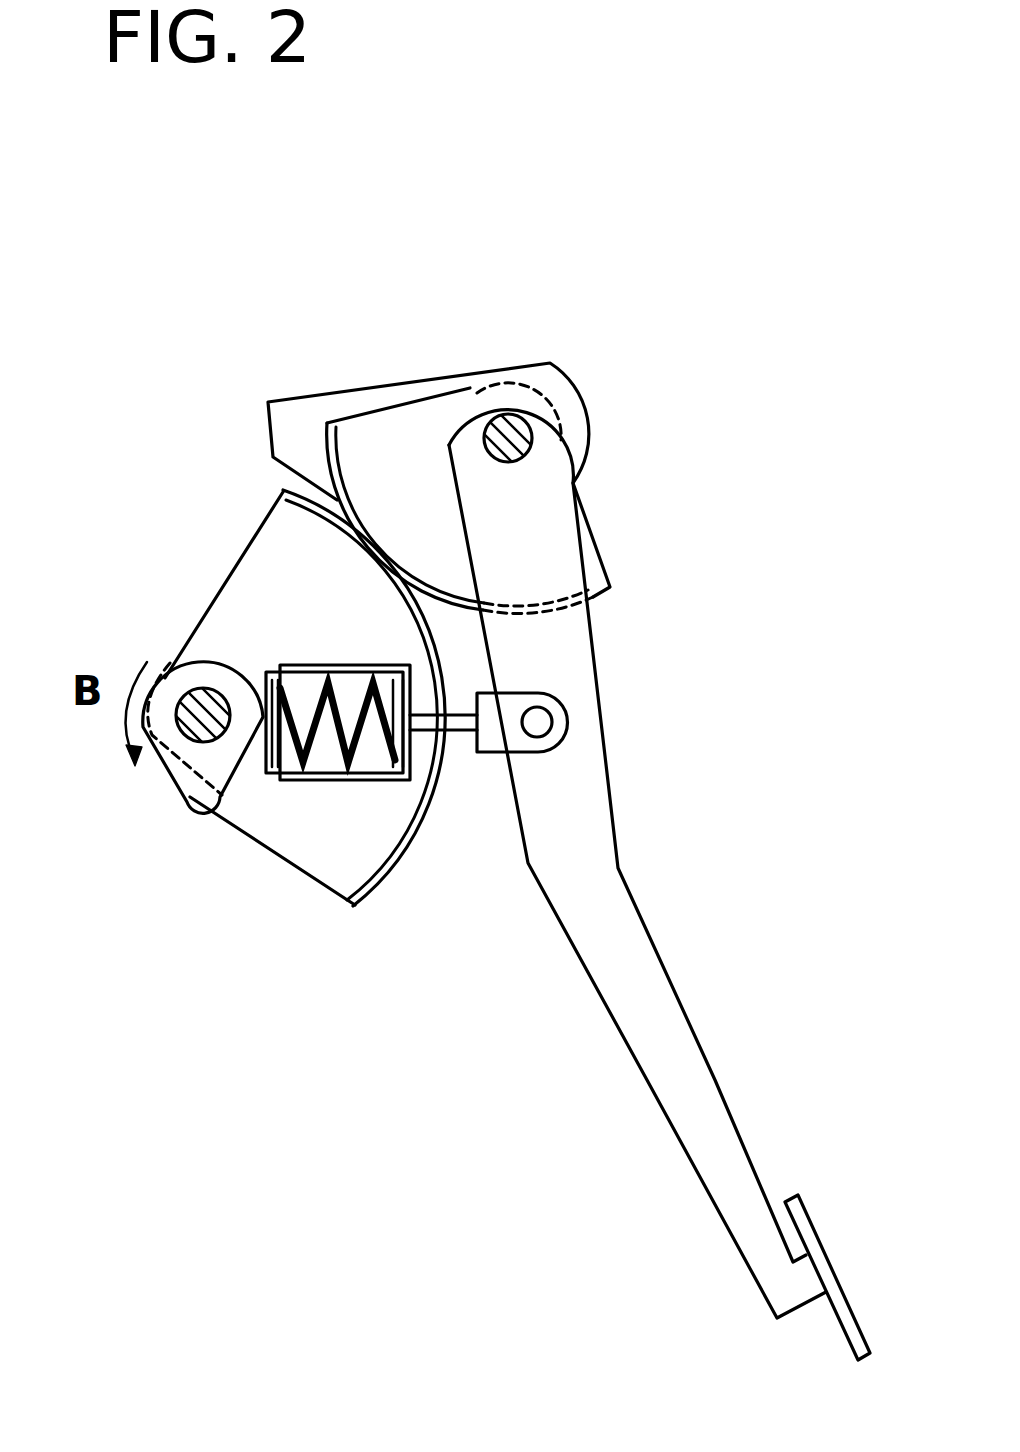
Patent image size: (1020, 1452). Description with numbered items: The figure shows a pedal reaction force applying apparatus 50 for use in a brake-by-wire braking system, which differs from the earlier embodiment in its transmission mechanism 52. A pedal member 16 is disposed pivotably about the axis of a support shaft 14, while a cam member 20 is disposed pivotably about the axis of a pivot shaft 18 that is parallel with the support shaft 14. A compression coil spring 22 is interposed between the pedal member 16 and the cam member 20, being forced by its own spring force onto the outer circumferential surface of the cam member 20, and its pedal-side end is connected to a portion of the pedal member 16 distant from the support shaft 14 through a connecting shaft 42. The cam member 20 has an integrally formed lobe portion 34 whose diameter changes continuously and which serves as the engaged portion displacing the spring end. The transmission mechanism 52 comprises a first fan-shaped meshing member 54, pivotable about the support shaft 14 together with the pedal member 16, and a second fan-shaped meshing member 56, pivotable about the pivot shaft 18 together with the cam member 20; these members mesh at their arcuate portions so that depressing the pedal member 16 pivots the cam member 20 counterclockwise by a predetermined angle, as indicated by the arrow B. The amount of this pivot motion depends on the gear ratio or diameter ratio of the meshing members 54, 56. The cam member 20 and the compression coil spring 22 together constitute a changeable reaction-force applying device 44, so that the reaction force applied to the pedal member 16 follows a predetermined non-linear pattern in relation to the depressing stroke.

The support shaft 14 is at (512, 434).
The pedal member 16 is at (660, 1007).
The pivot shaft 18 is at (200, 723).
The cam member 20 is at (210, 672).
The compression coil spring 22 is at (363, 740).
The lobe portion 34 is at (185, 803).
The connecting shaft 42 is at (543, 722).
The changeable reaction-force applying device 44 is at (122, 824).
The pedal reaction force applying apparatus 50 is at (700, 354).
The transmission mechanism 52 is at (243, 450).
The first fan-shaped meshing member 54 is at (378, 433).
The second fan-shaped meshing member 56 is at (258, 570).